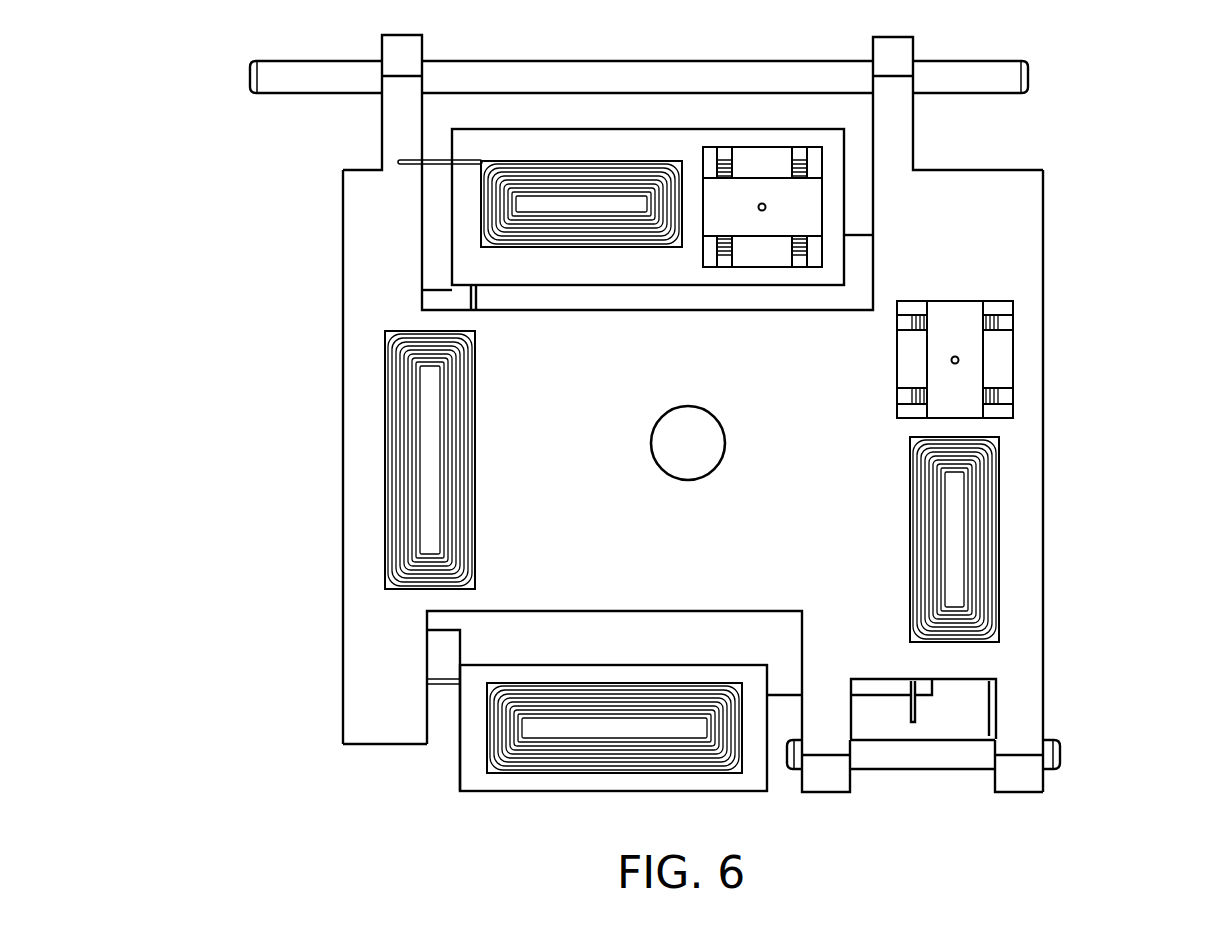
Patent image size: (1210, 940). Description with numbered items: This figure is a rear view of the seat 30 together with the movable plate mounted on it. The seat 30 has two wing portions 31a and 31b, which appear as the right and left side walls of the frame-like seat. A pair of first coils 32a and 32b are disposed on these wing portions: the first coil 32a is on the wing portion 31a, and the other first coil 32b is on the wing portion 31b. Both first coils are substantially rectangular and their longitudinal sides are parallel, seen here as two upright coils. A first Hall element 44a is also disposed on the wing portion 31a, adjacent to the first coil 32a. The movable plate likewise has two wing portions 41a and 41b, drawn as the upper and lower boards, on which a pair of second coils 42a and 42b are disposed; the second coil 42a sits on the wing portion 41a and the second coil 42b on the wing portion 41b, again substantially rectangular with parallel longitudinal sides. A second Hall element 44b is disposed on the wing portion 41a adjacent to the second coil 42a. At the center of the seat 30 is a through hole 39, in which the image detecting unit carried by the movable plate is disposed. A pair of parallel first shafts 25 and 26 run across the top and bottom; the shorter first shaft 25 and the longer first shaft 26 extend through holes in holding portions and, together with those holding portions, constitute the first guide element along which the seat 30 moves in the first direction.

The first shaft 25 is at (923, 760).
The first shaft 26 is at (1018, 78).
The seat 30 is at (1048, 187).
The wing portion 31a is at (1048, 483).
The wing portion 31b is at (337, 470).
The first coil 32a is at (1002, 560).
The first coil 32b is at (385, 543).
The through hole 39 is at (725, 443).
The wing portion 41a is at (663, 128).
The wing portion 41b is at (747, 793).
The second coil 42a is at (561, 160).
The second coil 42b is at (565, 772).
The first Hall element 44a is at (1015, 355).
The second Hall element 44b is at (766, 158).